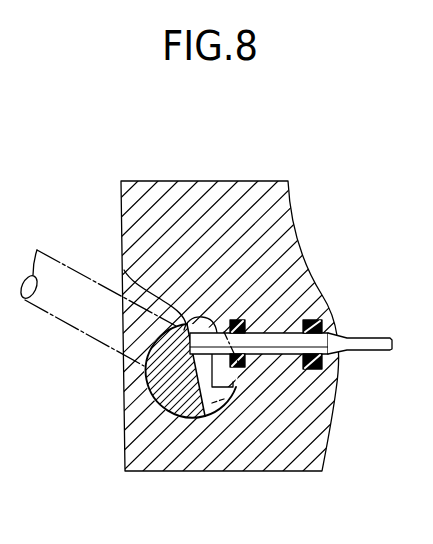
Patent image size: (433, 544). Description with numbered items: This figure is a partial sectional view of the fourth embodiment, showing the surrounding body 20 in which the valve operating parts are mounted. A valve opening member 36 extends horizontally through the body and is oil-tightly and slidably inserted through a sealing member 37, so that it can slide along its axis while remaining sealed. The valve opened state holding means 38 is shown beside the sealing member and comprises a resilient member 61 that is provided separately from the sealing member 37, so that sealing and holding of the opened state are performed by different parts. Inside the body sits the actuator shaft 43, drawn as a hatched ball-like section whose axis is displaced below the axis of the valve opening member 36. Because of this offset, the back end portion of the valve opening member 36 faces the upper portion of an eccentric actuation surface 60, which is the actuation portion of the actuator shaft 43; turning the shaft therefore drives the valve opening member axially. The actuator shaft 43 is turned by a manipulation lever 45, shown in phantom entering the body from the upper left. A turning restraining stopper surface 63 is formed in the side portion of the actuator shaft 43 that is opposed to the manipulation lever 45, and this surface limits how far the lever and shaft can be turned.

The housing block 20 is at (206, 181).
The valve opening member 36 is at (285, 360).
The sealing member 37 is at (318, 320).
The valve opened state holding means 38 is at (310, 269).
The actuator shaft 43 is at (148, 393).
The manipulation lever 45 is at (57, 258).
The eccentric actuation surface 60 is at (124, 270).
The resilient member 61 is at (239, 320).
The turning restraining stopper surface 63 is at (226, 398).